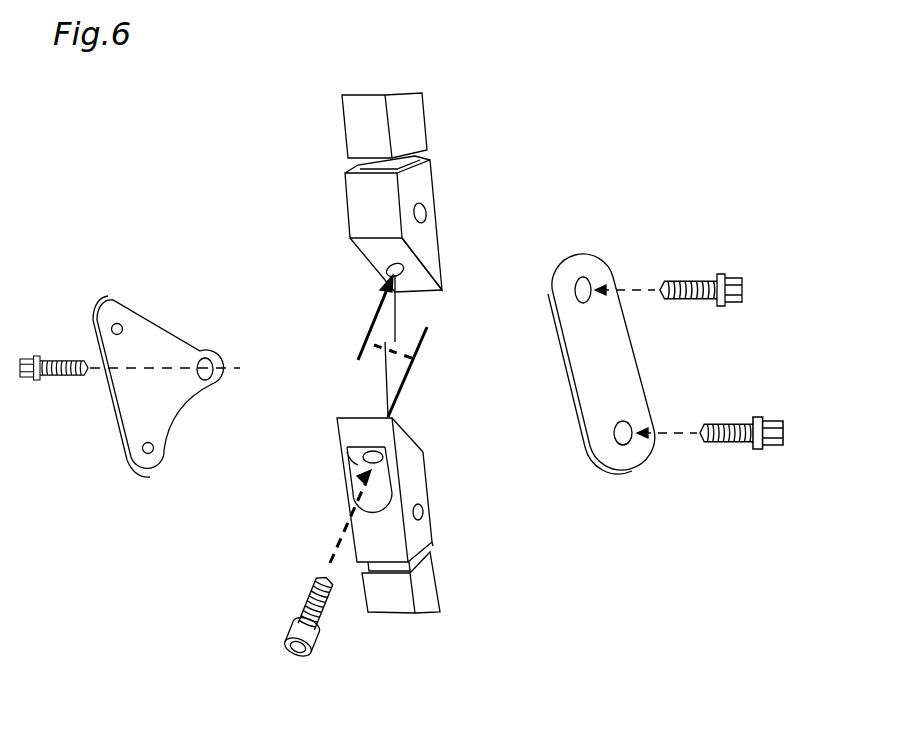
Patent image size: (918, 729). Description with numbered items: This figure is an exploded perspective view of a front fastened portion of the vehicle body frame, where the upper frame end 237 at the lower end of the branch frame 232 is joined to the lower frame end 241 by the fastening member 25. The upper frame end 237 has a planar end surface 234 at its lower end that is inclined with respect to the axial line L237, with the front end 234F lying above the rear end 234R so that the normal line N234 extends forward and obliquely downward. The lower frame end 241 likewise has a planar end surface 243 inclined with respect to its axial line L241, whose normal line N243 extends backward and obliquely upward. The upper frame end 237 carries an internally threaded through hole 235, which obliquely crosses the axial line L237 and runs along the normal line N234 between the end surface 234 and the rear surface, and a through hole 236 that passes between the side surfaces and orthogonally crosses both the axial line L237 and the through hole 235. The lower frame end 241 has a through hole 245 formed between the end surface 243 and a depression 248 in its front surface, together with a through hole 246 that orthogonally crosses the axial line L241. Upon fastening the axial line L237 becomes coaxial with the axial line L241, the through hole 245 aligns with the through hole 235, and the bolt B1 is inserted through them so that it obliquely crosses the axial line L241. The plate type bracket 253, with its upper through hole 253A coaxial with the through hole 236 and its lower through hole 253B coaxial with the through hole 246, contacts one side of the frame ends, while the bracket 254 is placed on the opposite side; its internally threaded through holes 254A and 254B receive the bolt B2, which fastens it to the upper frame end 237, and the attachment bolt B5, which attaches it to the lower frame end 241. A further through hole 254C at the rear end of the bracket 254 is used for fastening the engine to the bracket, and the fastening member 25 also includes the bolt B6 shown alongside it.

The fastening member 25 is at (623, 228).
The branch frame 232 is at (410, 128).
The end surface 234 is at (375, 253).
The front end of the end surface 234F is at (373, 240).
The rear end of the end surface 234R is at (418, 292).
The through hole 235 is at (403, 262).
The through hole 236 is at (427, 208).
The upper frame end 237 is at (332, 173).
The lower frame end 241 is at (418, 488).
The end surface 243 is at (412, 437).
The through hole 245 is at (355, 467).
The through hole 246 is at (428, 513).
The depression 248 is at (385, 480).
The bracket 253 is at (578, 260).
The through hole 253A is at (592, 287).
The through hole 253B is at (632, 427).
The bracket 254 is at (112, 312).
The through hole 254A is at (120, 329).
The through hole 254B is at (165, 448).
The through hole 254C is at (217, 377).
The bolt B1 is at (327, 613).
The bolt B2 is at (714, 320).
The attachment bolt B5 is at (750, 408).
The bolt B6 is at (67, 377).
The axial line L237 is at (393, 320).
The axial line L241 is at (385, 387).
The normal line N234 is at (373, 348).
The normal line N243 is at (420, 350).